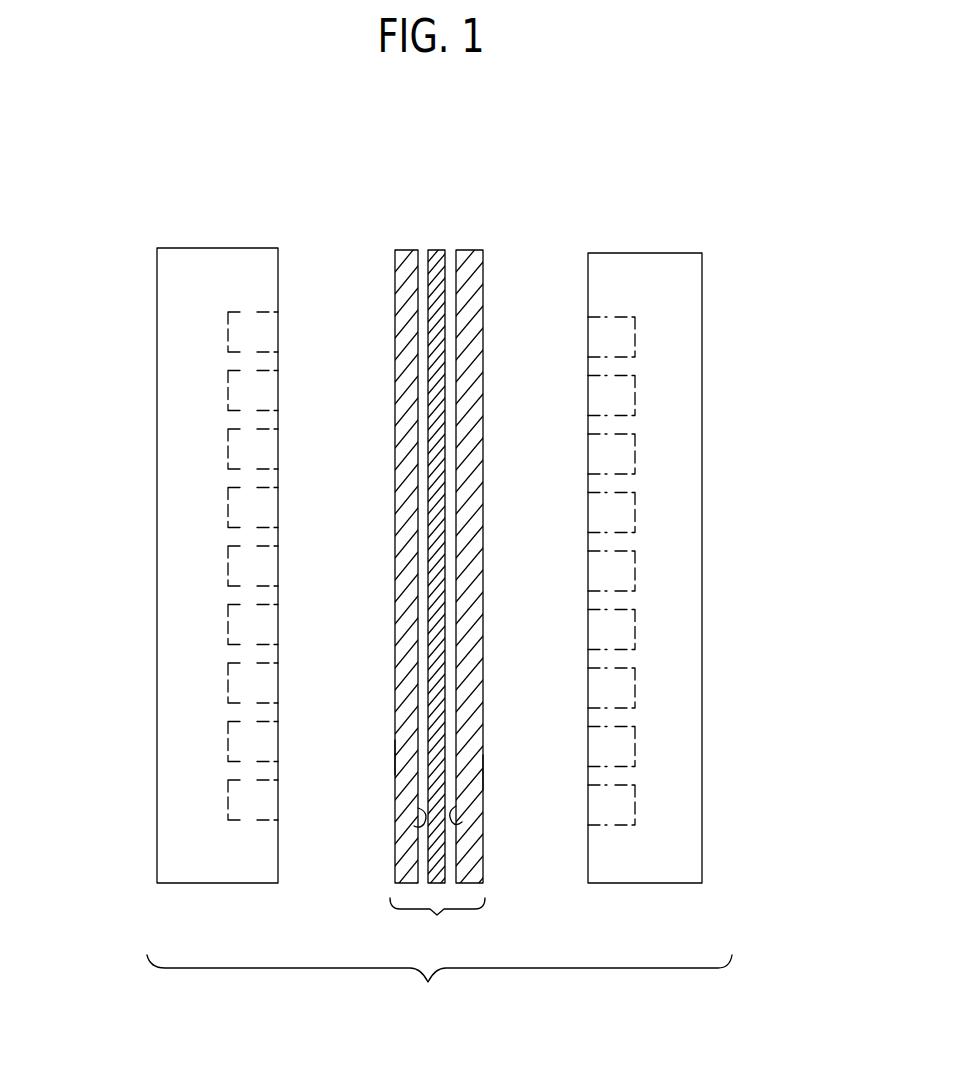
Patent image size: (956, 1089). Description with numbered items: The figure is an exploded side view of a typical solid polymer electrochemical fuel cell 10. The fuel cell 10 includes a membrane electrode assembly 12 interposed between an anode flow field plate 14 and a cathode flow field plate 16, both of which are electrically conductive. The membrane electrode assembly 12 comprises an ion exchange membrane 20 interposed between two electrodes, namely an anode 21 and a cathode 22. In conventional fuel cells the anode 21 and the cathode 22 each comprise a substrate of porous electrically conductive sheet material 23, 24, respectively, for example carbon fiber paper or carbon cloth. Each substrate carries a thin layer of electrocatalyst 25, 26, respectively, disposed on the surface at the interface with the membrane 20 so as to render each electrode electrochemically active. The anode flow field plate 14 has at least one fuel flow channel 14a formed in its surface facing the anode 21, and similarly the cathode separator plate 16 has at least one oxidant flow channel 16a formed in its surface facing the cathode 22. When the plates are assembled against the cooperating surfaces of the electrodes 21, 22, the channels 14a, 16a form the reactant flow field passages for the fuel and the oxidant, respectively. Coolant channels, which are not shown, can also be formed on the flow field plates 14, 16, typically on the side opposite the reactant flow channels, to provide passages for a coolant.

The fuel cell 10 is at (439, 988).
The membrane electrode assembly 12 is at (437, 925).
The anode flow field plate 14 is at (685, 468).
The fuel flow channel 14a is at (633, 573).
The cathode flow field plate 16 is at (167, 402).
The oxidant flow channel 16a is at (217, 565).
The ion exchange membrane 20 is at (438, 249).
The anode 21 is at (468, 249).
The cathode 22 is at (405, 249).
The porous electrically conductive sheet material 23 is at (473, 773).
The porous electrically conductive sheet material 24 is at (408, 758).
The electrocatalyst layer 25 is at (462, 822).
The electrocatalyst layer 26 is at (414, 826).